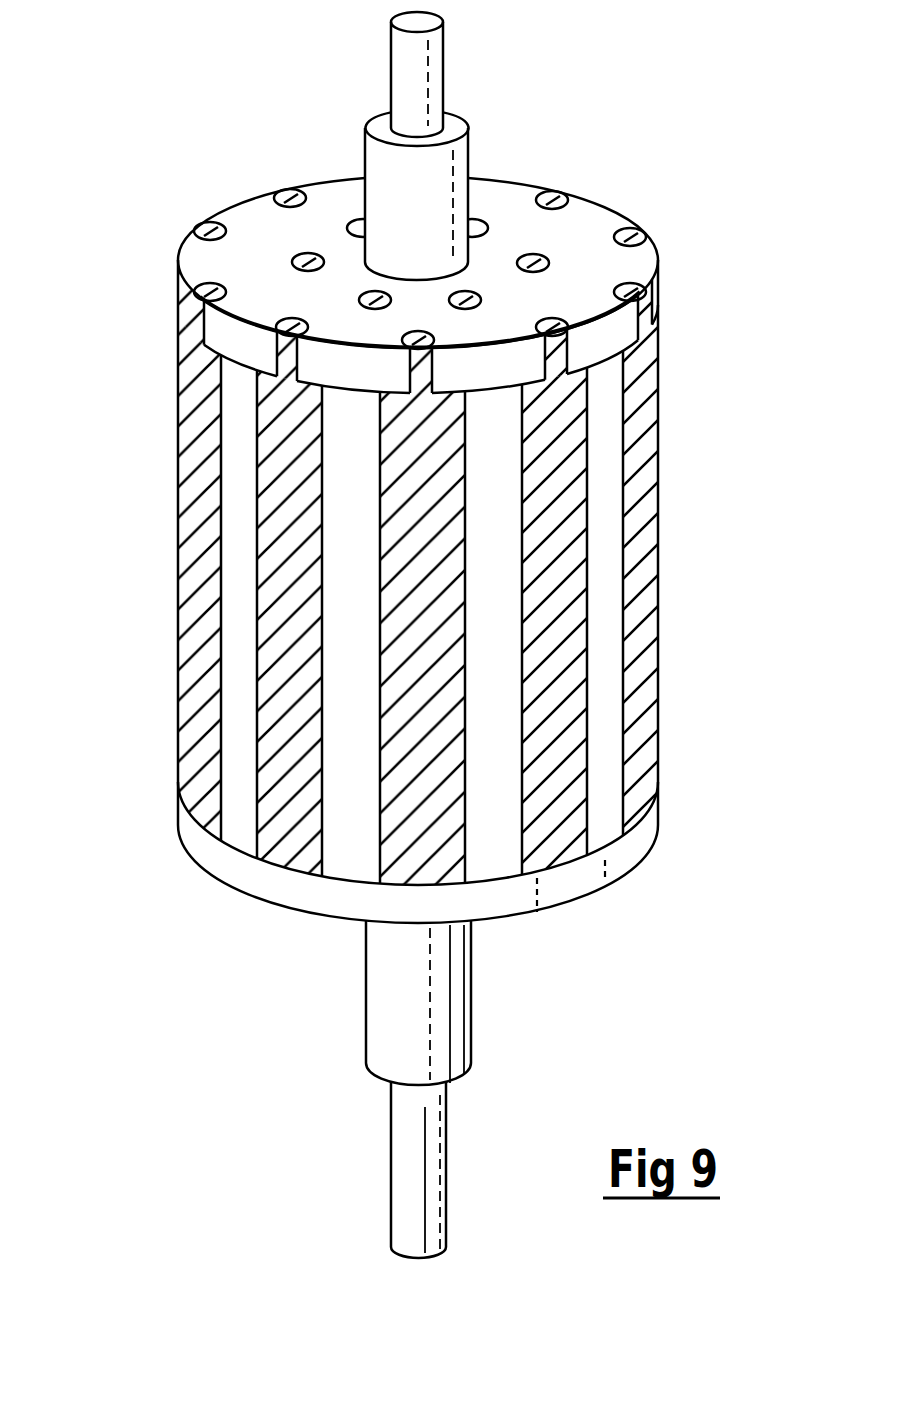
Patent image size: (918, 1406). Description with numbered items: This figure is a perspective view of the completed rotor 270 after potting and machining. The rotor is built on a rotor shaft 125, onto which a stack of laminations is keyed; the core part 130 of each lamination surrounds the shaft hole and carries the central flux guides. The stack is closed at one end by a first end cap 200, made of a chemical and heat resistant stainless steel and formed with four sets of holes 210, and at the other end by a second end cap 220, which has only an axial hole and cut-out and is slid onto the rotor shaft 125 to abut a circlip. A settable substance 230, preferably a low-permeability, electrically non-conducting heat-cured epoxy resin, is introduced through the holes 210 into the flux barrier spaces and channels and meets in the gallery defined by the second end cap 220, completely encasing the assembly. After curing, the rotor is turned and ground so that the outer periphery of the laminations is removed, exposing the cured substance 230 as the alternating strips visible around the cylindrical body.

The rotor shaft 125 is at (387, 1040).
The core part 130 is at (598, 560).
The first end cap 200 is at (265, 240).
The holes 210 is at (553, 200).
The second end cap 220 is at (560, 885).
The settable substance 230 is at (283, 584).
The rotor assembly 270 is at (714, 246).